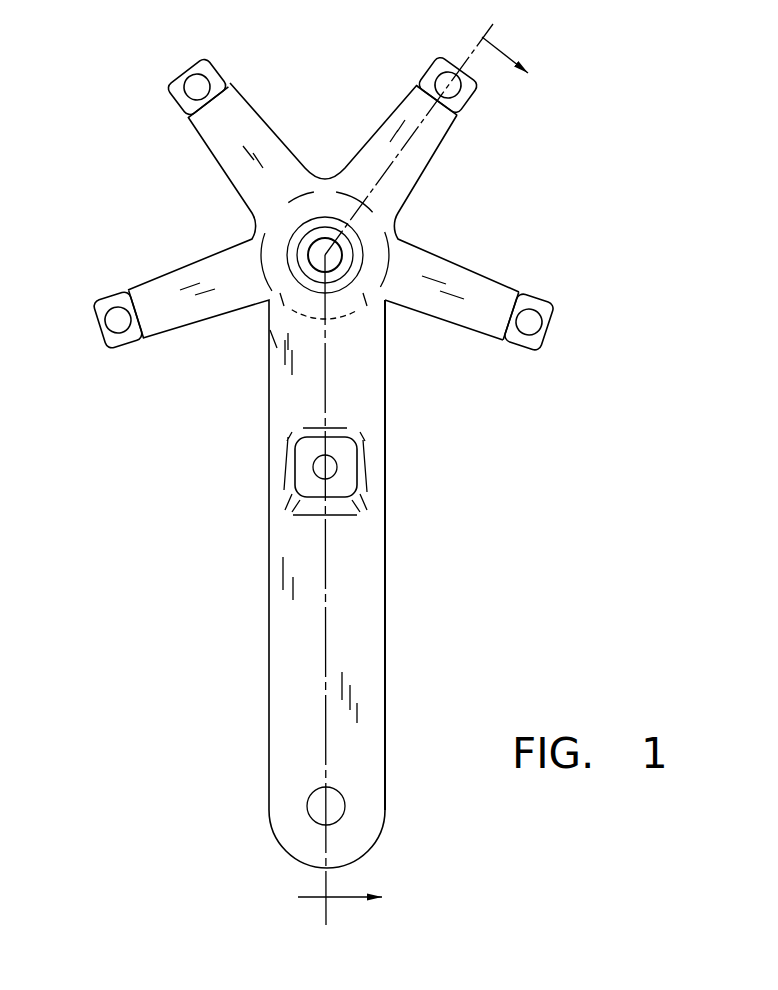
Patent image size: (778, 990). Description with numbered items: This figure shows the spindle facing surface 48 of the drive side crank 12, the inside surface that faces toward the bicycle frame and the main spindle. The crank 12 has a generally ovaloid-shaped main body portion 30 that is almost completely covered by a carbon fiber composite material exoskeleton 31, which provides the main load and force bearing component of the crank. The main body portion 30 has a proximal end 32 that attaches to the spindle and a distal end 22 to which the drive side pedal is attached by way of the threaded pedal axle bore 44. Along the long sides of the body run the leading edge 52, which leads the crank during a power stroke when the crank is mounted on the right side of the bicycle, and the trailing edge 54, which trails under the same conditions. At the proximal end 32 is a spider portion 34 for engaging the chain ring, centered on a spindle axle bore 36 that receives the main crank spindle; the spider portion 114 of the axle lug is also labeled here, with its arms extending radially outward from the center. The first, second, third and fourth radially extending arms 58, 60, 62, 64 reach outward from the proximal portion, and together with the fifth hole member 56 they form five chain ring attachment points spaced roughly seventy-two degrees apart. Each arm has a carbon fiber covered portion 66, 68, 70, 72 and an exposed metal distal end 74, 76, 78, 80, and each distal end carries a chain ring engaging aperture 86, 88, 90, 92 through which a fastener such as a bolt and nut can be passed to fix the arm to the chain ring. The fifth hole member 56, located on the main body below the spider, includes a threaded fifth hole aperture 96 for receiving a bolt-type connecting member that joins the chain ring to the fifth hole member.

The drive side crank 12 is at (612, 188).
The distal end 22 is at (385, 845).
The main body portion 30 is at (408, 498).
The carbon fiber composite material exoskeleton 31 is at (350, 638).
The proximal end 32 is at (542, 170).
The spider portion 34 is at (437, 233).
The spindle axle bore 36 is at (325, 255).
The pedal axle bore 44 is at (333, 803).
The spindle facing surface 48 is at (313, 701).
The leading edge 52 is at (385, 563).
The trailing edge 54 is at (269, 623).
The fifth hole member 56 is at (366, 462).
The first radially extending arm 58 is at (168, 380).
The second radially extending arm 60 is at (188, 158).
The third radially extending arm 62 is at (368, 146).
The fourth radially extending arm 64 is at (418, 325).
The carbon fiber covered portion 66 is at (163, 310).
The carbon fiber covered portion 68 is at (235, 104).
The carbon fiber covered portion 70 is at (412, 158).
The carbon fiber covered portion 72 is at (437, 270).
The exposed metal distal end 74 is at (128, 292).
The exposed metal distal end 76 is at (180, 100).
The exposed metal distal end 78 is at (457, 114).
The exposed metal distal end 80 is at (546, 308).
The chain ring engaging aperture 86 is at (118, 320).
The chain ring engaging aperture 88 is at (198, 86).
The chain ring engaging aperture 90 is at (438, 86).
The chain ring engaging aperture 92 is at (528, 322).
The fifth hole aperture 96 is at (317, 468).
The spider portion 114 is at (329, 160).